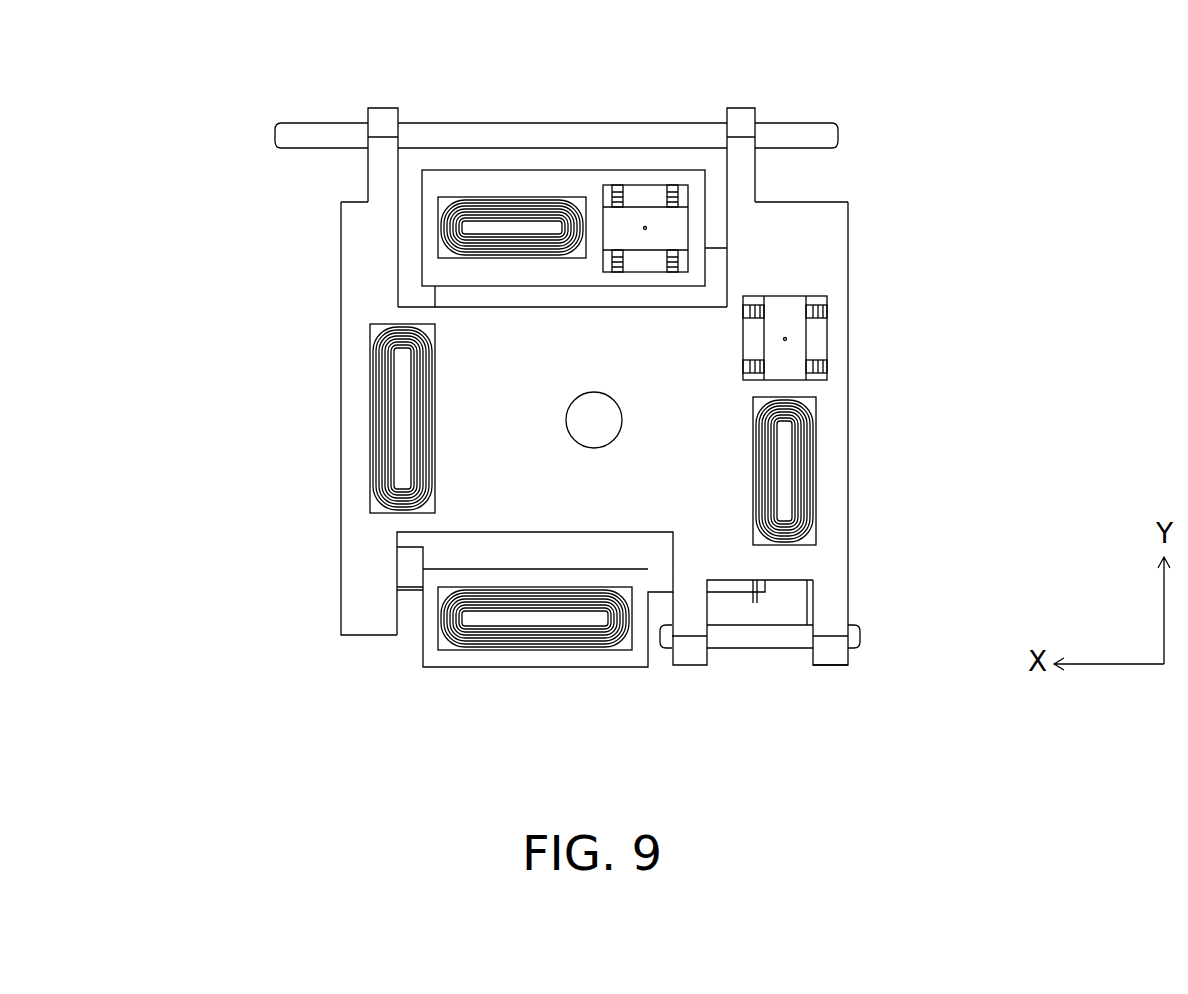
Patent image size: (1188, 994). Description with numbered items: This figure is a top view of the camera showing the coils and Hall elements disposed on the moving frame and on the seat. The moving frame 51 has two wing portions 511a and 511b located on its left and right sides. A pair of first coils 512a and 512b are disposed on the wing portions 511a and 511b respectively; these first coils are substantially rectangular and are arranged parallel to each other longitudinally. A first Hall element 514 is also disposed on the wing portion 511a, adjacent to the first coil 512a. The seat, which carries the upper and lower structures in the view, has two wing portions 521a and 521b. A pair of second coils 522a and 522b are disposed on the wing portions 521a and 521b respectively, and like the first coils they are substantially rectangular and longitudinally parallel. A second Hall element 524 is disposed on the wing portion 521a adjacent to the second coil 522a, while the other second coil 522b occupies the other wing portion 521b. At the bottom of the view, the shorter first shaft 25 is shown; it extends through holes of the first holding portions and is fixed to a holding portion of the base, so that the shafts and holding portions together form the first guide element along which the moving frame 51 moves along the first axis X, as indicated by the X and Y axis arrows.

The moving frame 51 is at (861, 244).
The wing portion 511a is at (861, 453).
The wing portion 511b is at (329, 451).
The first coil 512a is at (832, 503).
The first coil 512b is at (358, 503).
The first Hall element 514 is at (840, 344).
The wing portion 521a is at (598, 159).
The second coil 522a is at (524, 184).
The second Hall element 524 is at (654, 187).
The wing portion 521b is at (607, 681).
The second coil 522b is at (497, 664).
The first shaft 25 is at (773, 638).